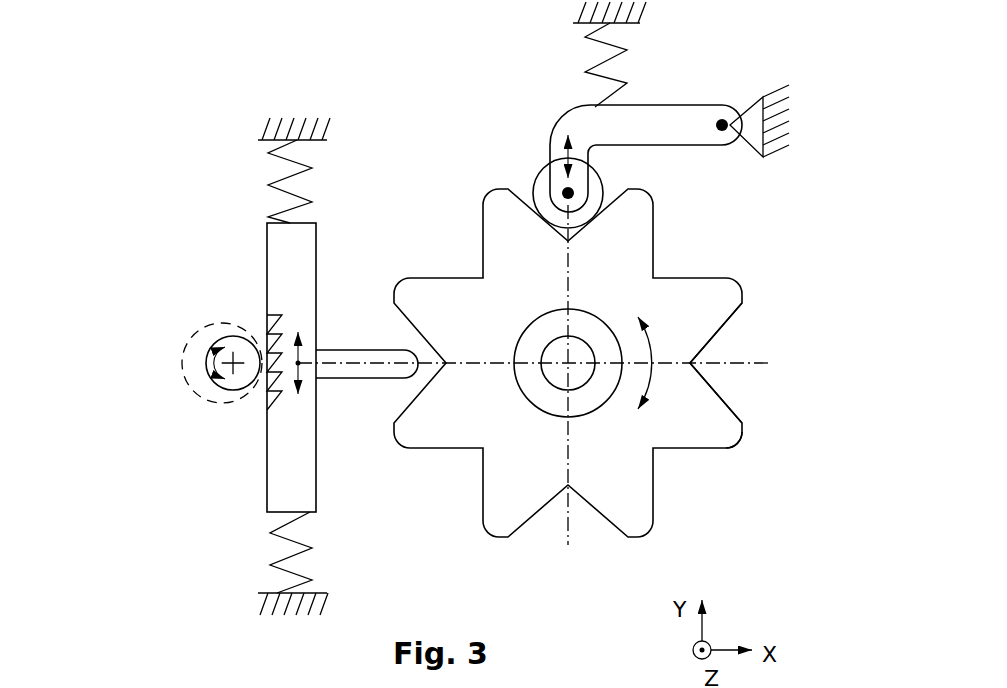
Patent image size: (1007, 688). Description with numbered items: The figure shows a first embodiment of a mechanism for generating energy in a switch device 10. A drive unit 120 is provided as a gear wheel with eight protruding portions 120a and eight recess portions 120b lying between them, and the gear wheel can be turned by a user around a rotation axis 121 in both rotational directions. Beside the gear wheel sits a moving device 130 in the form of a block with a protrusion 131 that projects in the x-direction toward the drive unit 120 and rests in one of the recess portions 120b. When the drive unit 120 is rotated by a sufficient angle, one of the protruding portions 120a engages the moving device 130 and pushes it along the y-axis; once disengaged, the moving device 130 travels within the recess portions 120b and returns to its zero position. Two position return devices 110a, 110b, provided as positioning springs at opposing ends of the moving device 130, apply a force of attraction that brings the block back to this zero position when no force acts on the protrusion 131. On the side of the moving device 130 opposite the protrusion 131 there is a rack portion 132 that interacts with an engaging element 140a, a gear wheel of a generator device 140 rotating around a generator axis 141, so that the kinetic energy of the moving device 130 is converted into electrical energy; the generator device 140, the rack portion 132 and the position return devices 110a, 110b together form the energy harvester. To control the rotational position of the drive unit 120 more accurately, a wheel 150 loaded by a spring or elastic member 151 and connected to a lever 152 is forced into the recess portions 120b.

The switch device 10 is at (732, 222).
The position return device 110a is at (240, 190).
The position return device 110b is at (257, 545).
The drive unit 120 is at (667, 412).
The protruding portions 120a is at (745, 443).
The recess portions 120b is at (712, 367).
The rotation axis 121 is at (568, 363).
The moving device 130 is at (277, 445).
The protrusion 131 is at (357, 340).
The rack portion 132 is at (252, 392).
The generator device 140 is at (205, 318).
The engaging element 140a is at (202, 368).
The generator axis 141 is at (245, 338).
The wheel 150 is at (603, 180).
The spring or elastic member 151 is at (626, 83).
The lever 152 is at (682, 120).